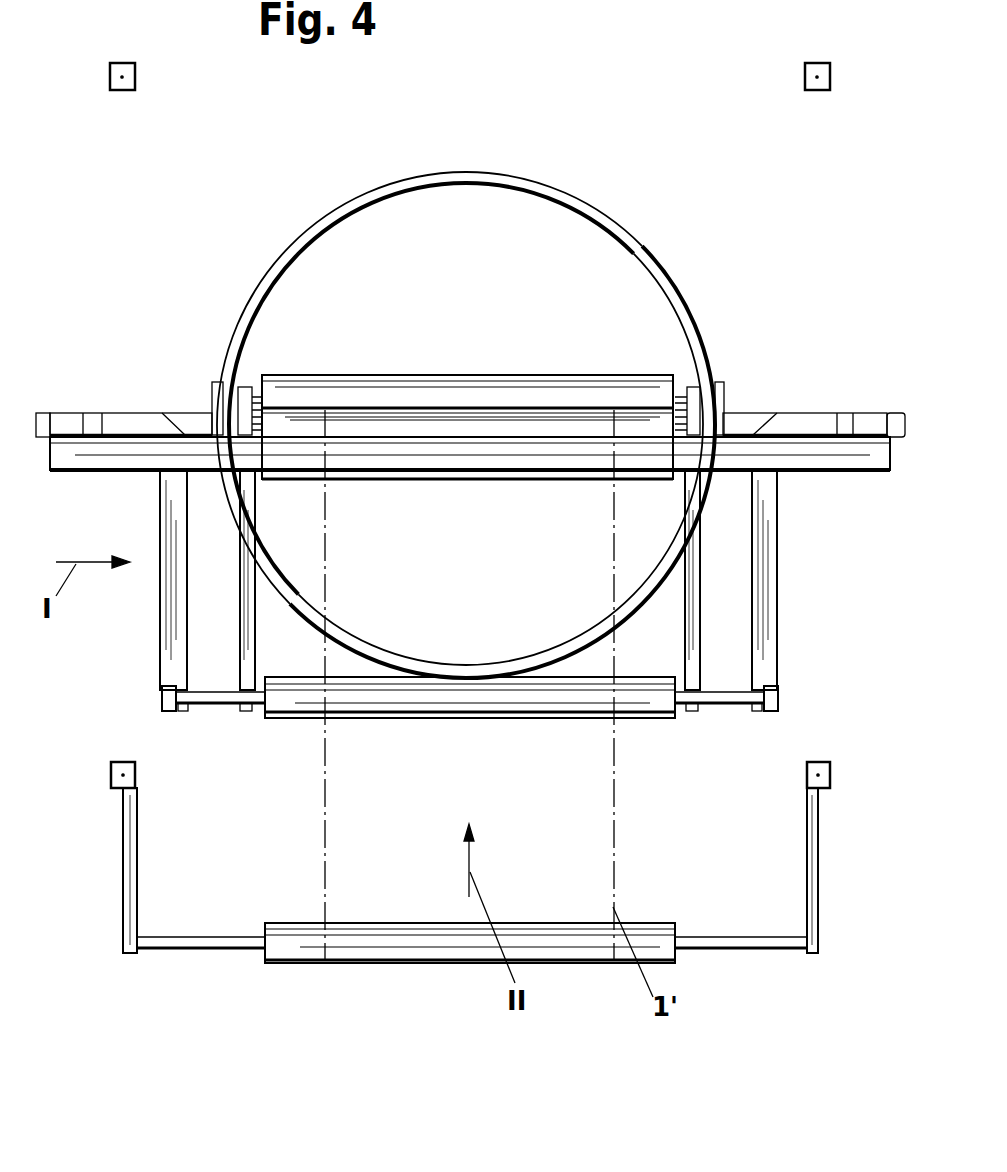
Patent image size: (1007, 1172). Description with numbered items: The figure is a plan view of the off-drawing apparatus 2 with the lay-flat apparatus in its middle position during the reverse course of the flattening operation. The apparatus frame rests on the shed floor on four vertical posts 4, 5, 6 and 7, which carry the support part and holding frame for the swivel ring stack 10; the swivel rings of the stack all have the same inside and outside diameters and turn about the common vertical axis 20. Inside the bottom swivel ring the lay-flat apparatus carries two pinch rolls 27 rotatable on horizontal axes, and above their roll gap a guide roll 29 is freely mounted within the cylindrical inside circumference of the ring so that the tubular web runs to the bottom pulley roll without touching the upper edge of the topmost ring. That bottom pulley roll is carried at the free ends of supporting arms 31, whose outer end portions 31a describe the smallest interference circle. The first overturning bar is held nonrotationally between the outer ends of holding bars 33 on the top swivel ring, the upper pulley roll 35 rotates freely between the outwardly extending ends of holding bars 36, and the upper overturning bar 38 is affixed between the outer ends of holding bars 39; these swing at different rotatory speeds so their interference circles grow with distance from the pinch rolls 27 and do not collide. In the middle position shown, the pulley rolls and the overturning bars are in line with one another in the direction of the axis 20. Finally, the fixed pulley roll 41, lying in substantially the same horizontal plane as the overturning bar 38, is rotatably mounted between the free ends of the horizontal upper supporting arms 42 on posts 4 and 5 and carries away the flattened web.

The off-drawing apparatus 2 is at (284, 225).
The swivel ring stack 10 is at (447, 172).
The vertical axis 20 is at (467, 425).
The pinch rolls 27 is at (367, 467).
The guide roll 29 is at (573, 417).
The holding bars 33 is at (120, 418).
The holding bars 39 is at (68, 416).
The overturning bar 38 is at (86, 456).
The holding bars 36 is at (175, 612).
The supporting arms 31 is at (240, 622).
The outer end portions 31a is at (240, 712).
The upper pulley roll 35 is at (640, 690).
The vertical post 4 is at (113, 776).
The vertical post 5 is at (826, 780).
The vertical post 6 is at (135, 64).
The vertical post 7 is at (806, 66).
The horizontal upper supporting arms 42 is at (126, 880).
The pulley roll 41 is at (402, 942).